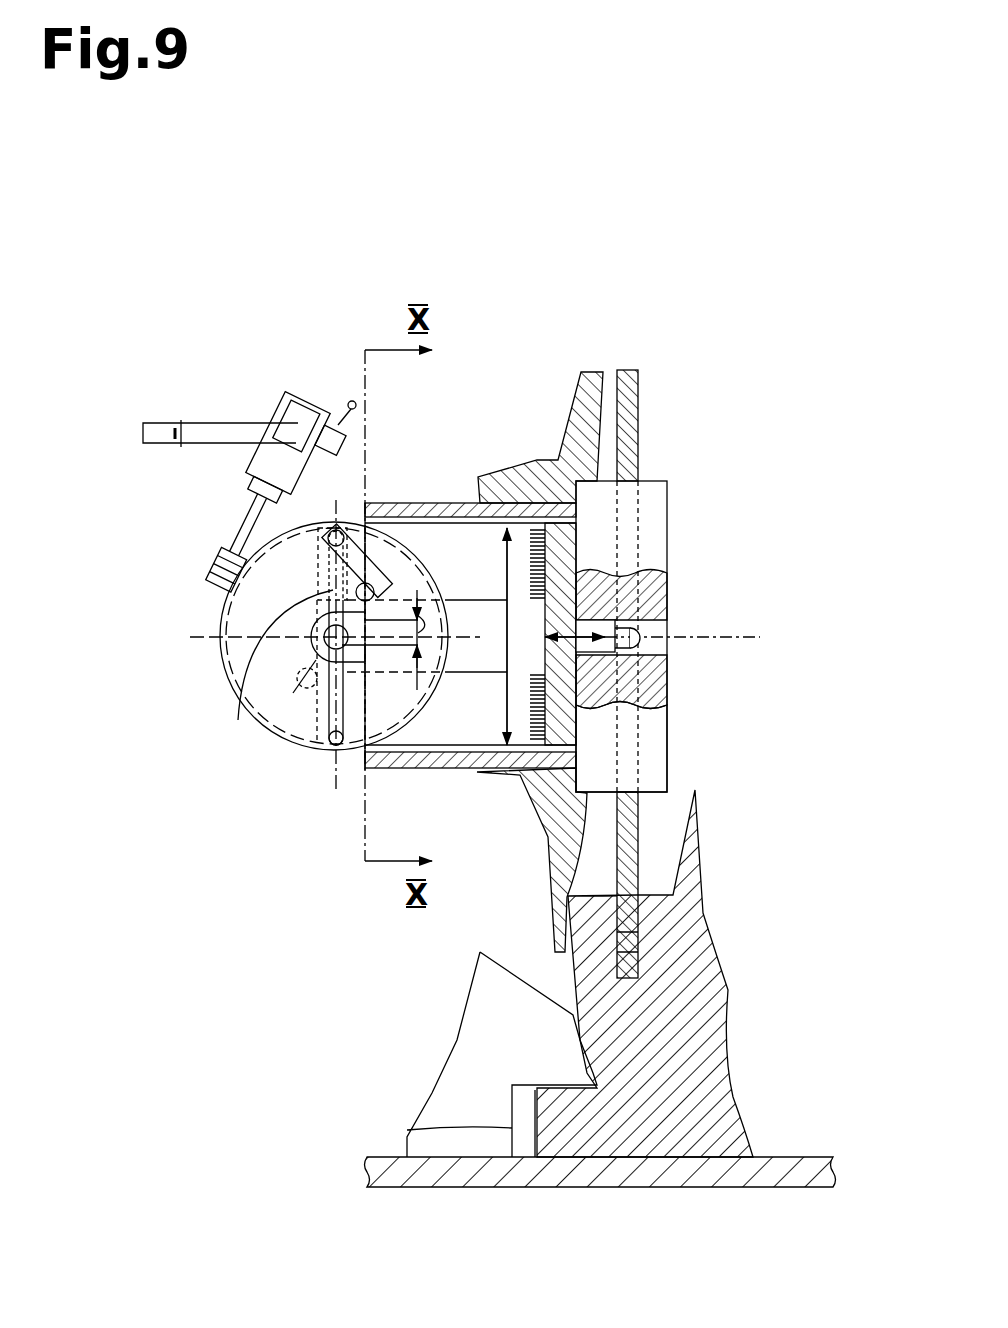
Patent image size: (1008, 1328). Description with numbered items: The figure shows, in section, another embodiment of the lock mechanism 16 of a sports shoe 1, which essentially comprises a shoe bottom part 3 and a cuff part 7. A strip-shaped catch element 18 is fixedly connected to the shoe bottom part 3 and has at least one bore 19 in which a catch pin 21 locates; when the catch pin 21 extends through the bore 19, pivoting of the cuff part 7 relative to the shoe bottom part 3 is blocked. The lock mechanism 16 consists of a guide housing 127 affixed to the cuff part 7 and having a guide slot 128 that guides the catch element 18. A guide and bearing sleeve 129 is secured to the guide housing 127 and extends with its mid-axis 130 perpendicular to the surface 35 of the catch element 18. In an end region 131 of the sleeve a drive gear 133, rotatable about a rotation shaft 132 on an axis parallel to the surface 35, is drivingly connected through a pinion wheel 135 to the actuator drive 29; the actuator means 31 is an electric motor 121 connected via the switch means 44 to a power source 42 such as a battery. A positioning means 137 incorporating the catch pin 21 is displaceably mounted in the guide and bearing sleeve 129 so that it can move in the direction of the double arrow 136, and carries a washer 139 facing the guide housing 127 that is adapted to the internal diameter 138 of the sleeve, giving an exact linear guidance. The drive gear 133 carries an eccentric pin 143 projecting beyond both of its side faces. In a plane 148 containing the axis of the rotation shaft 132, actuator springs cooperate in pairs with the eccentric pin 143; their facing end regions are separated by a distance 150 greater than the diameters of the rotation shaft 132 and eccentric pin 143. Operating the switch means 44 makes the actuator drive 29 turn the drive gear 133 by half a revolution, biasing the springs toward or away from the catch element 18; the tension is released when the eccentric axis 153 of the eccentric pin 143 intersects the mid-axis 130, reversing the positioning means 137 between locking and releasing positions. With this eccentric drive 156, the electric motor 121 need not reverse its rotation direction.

The sports shoe 1 is at (320, 975).
The shoe bottom part 3 is at (707, 973).
The cuff part 7 is at (580, 390).
The lock mechanism 16 is at (217, 843).
The catch element 18 is at (630, 393).
The bore 19 is at (623, 643).
The catch pin 21 is at (640, 627).
The actuator drive 29 is at (223, 455).
The actuator means 31 is at (340, 345).
The surface 35 is at (606, 848).
The power source 42 is at (195, 467).
The switch means 44 is at (285, 413).
The electric motor 121 is at (287, 398).
The guide housing 127 is at (607, 765).
The guide slot 128 is at (618, 538).
The guide and bearing sleeve 129 is at (400, 770).
The mid-axis 130 is at (215, 645).
The end region 131 is at (393, 445).
The rotation shaft 132 is at (252, 733).
The drive gear 133 is at (303, 723).
The pinion wheel 135 is at (212, 580).
The double arrow 136 is at (640, 702).
The positioning means 137 is at (473, 557).
The internal diameter 138 is at (500, 655).
The washer 139 is at (560, 727).
The eccentric pin 143 is at (362, 585).
The plane 148 is at (336, 793).
The distance 150 is at (467, 528).
The eccentric axis 153 is at (298, 675).
The eccentric drive 156 is at (250, 613).